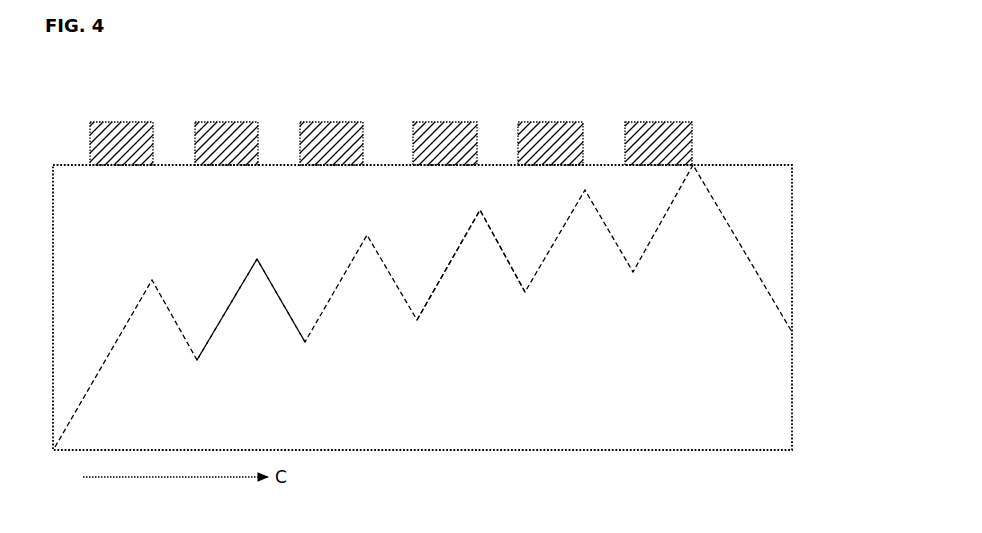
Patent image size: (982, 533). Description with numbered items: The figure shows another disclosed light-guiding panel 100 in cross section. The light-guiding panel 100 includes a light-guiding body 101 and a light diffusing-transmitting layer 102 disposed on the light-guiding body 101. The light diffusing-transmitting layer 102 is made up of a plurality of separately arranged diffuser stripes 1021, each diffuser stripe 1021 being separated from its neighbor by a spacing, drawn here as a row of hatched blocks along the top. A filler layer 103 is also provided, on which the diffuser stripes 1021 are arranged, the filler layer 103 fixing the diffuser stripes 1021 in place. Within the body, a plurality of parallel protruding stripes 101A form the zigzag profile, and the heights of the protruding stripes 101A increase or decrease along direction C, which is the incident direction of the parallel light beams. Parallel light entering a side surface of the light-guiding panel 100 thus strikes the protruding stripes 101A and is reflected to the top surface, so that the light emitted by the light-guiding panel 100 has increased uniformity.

The light-guiding panel 100 is at (831, 83).
The light-guiding body 101 is at (723, 210).
The protruding stripes 101A is at (257, 313).
The light diffusing-transmitting layer 102 is at (472, 110).
The diffuser stripes 1021 is at (563, 121).
The filler layer 103 is at (768, 252).